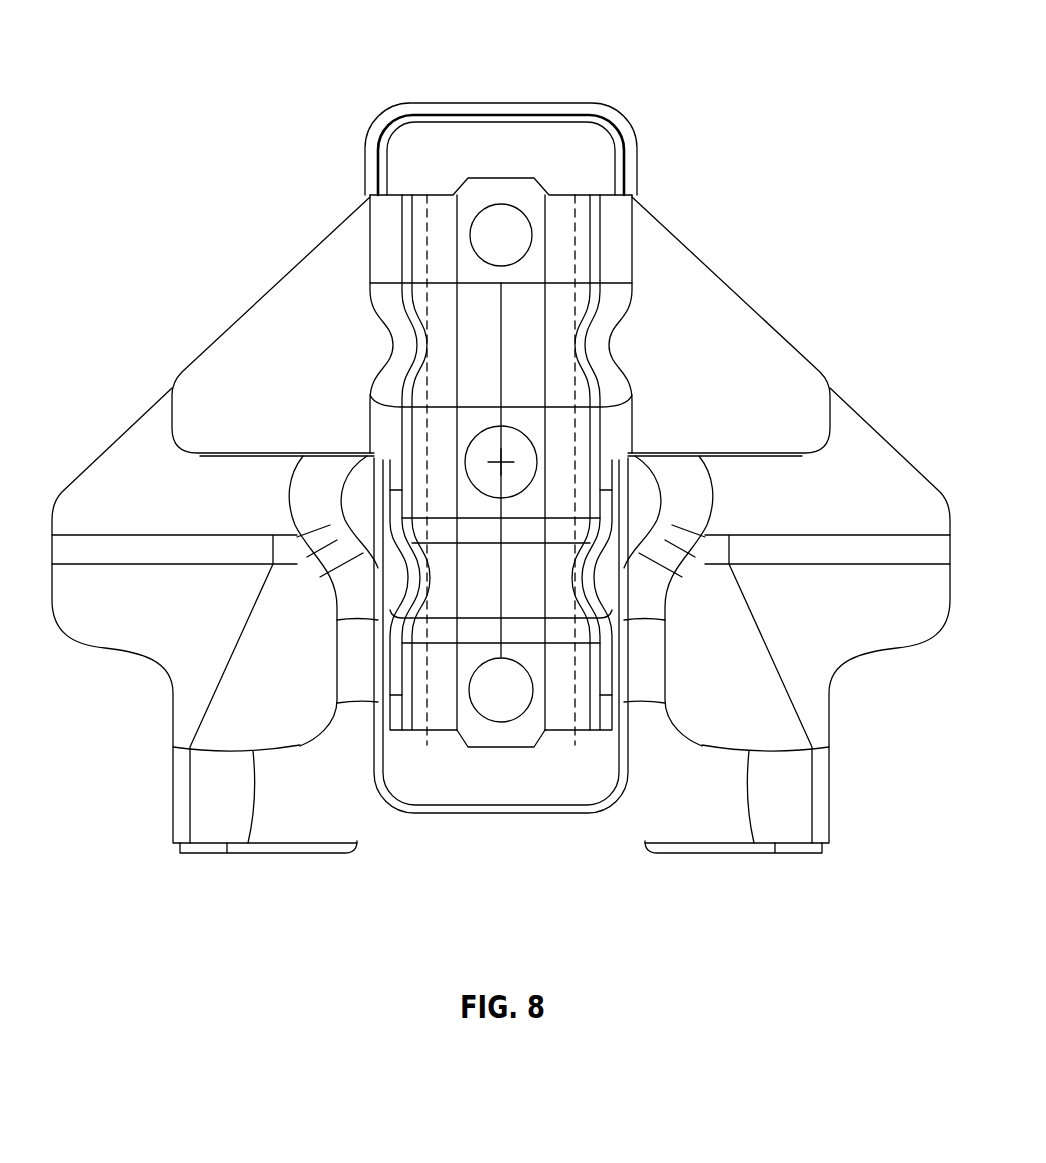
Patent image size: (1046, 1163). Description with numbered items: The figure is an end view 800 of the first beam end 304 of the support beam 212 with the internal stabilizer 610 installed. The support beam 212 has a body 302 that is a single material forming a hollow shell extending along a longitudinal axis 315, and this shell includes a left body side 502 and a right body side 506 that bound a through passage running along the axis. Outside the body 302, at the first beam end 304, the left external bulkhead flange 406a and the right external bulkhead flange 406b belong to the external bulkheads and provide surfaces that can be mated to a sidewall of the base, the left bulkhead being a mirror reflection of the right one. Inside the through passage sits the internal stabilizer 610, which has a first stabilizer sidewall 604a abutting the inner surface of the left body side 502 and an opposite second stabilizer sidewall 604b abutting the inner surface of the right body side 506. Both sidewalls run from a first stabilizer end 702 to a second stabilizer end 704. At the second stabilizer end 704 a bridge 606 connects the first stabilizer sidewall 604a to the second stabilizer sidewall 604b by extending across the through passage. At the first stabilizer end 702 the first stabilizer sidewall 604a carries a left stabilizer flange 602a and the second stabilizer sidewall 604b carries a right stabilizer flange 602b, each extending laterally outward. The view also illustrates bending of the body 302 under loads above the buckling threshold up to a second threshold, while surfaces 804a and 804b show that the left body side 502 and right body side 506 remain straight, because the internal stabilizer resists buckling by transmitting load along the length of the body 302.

The end view 800 is at (128, 92).
The first beam end 304 is at (438, 90).
The internal stabilizer 610 is at (363, 212).
The first stabilizer sidewall 604a is at (410, 253).
The second stabilizer sidewall 604b is at (595, 242).
The bridge 606 is at (530, 500).
The longitudinal axis 315 is at (510, 457).
The left body side 502 is at (390, 757).
The right body side 506 is at (615, 763).
The second stabilizer end 704 is at (497, 755).
The body 302 is at (512, 818).
The support beam 212 is at (540, 822).
The left stabilizer flange 602a is at (268, 323).
The right stabilizer flange 602b is at (727, 313).
The first stabilizer end 702 is at (238, 357).
The left external bulkhead flange 406a is at (125, 480).
The right external bulkhead flange 406b is at (862, 465).
The surface 804a is at (423, 660).
The surface 804b is at (578, 707).